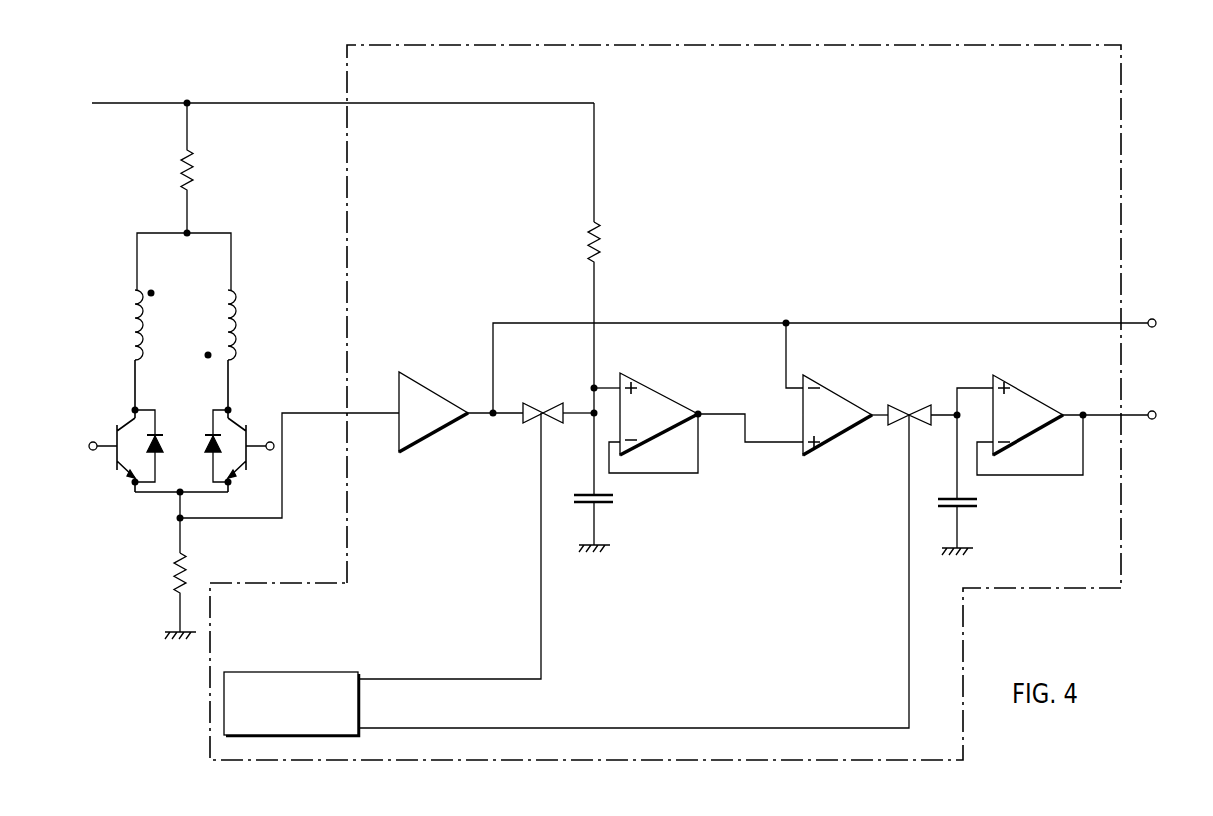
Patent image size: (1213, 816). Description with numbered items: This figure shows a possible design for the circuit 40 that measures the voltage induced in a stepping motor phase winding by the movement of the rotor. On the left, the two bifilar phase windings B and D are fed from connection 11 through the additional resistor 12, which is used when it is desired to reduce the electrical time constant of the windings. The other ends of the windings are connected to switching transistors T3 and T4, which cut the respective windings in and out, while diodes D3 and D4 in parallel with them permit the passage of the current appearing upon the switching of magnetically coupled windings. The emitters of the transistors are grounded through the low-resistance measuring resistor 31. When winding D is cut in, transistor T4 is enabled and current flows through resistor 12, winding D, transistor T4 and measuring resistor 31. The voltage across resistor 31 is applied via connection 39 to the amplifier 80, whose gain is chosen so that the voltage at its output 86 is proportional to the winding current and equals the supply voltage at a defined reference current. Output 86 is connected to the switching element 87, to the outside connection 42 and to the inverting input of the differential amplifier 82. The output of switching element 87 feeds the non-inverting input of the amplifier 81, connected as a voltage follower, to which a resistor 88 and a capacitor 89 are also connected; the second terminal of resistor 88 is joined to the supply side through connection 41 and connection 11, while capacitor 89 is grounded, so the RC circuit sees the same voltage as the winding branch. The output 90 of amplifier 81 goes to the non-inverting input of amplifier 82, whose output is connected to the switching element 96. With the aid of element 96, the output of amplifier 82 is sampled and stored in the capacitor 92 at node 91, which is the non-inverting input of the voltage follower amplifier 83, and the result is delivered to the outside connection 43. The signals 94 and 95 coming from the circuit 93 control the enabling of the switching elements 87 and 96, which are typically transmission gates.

The connection 11 is at (133, 102).
The additional resistor 12 is at (196, 175).
The phase winding B is at (128, 325).
The phase winding D is at (232, 325).
The switching transistor T3 is at (111, 426).
The switching transistor T4 is at (251, 426).
The diode D3 is at (160, 446).
The diode D4 is at (201, 451).
The measuring resistor 31 is at (172, 583).
The connection 39 is at (322, 405).
The circuit 40 is at (755, 45).
The connection 41 is at (267, 102).
The outside connection 42 is at (1155, 319).
The connection 43 is at (1155, 411).
The amplifier 80 is at (416, 400).
The amplifier 81 is at (655, 397).
The differential amplifier 82 is at (843, 407).
The amplifier 83 is at (1030, 407).
The output 86 is at (470, 407).
The switching element 87 is at (543, 405).
The resistor 88 is at (600, 240).
The capacitor 89 is at (605, 505).
The output 90 is at (702, 408).
The circuit node 91 is at (884, 407).
The capacitor 92 is at (966, 509).
The circuit 93 is at (345, 683).
The signal 94 is at (541, 652).
The signal 95 is at (909, 665).
The switching element 96 is at (914, 405).